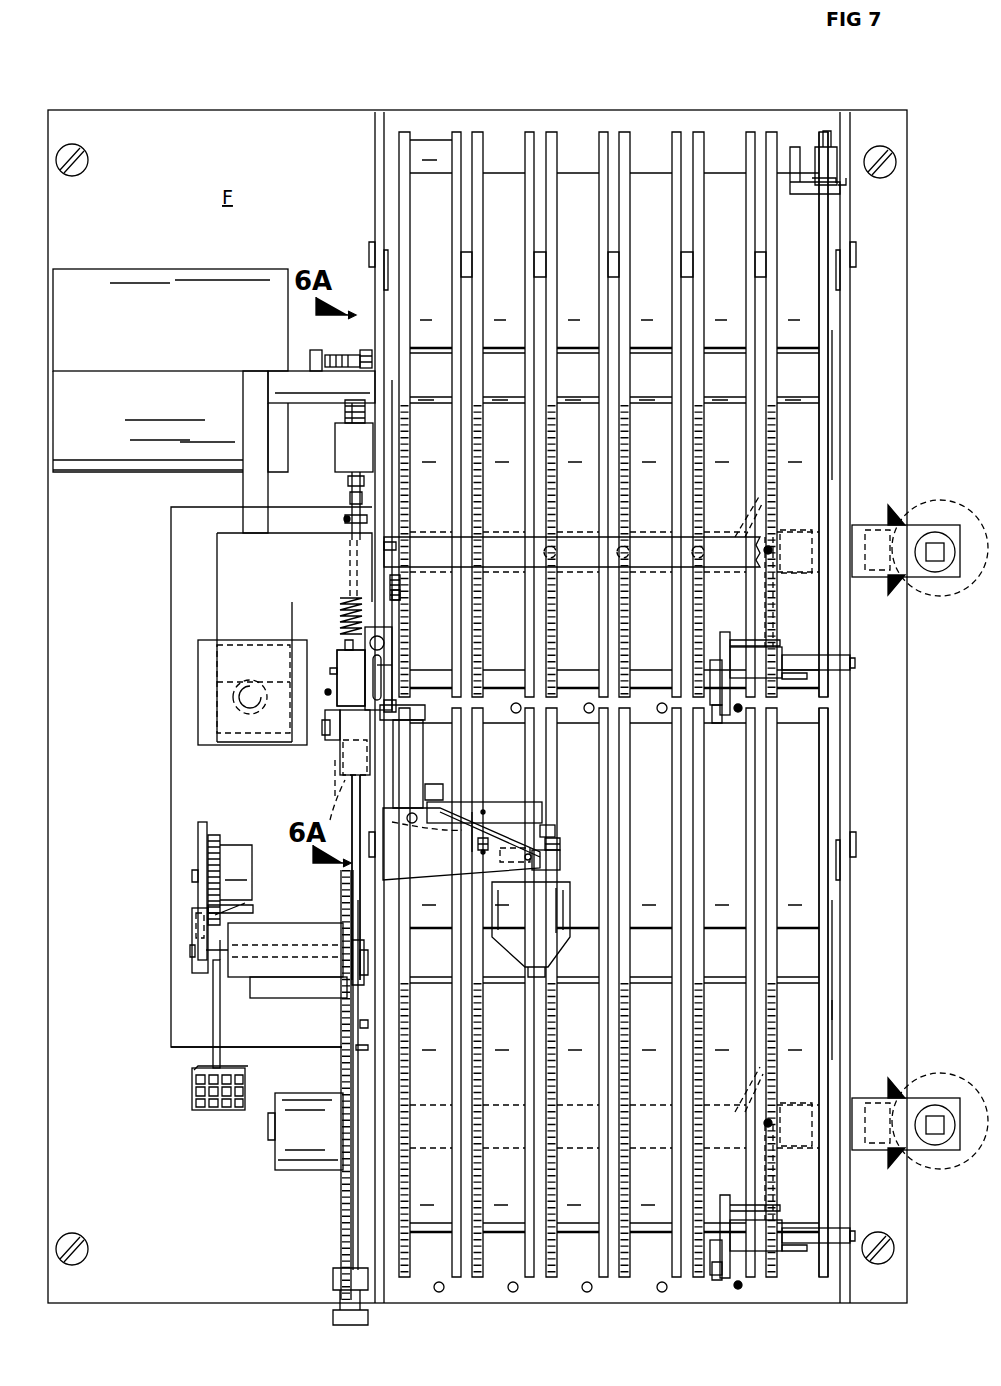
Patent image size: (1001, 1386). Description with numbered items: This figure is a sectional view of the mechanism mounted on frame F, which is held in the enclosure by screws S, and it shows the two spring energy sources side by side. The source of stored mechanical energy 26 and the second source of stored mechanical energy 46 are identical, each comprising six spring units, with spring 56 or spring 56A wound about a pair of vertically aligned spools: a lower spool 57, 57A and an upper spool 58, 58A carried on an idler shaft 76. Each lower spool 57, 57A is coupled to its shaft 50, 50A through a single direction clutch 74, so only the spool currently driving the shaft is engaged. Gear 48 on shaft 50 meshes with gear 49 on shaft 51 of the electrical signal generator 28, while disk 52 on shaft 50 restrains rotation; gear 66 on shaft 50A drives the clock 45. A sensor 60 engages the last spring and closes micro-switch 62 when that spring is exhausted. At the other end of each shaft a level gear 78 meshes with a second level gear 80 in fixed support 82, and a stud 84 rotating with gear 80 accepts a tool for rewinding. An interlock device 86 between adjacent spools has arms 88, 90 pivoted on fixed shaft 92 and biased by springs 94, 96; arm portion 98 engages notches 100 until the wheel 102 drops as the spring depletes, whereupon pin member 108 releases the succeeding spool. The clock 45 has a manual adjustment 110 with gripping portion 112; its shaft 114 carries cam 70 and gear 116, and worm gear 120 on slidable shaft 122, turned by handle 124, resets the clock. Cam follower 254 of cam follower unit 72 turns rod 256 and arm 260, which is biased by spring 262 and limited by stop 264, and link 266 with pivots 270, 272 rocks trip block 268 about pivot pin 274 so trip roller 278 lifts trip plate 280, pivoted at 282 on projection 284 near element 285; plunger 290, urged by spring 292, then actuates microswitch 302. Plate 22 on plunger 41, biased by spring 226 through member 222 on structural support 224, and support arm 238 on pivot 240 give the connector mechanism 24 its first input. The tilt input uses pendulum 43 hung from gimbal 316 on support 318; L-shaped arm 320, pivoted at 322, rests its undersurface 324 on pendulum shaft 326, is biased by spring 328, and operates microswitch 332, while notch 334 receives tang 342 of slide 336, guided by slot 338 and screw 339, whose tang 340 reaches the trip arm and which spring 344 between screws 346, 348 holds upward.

The plate 22 is at (198, 668).
The connector mechanism 24 is at (163, 623).
The source of stored mechanical energy 26 is at (838, 401).
The electrical signal generator 28 is at (159, 273).
The plunger 41 is at (217, 682).
The pendulum 43 is at (585, 922).
The clock 45 is at (279, 1011).
The second source of stored mechanical energy 46 is at (840, 989).
The gear 48 is at (364, 350).
The second gear 49 is at (330, 350).
The shaft 50 is at (277, 1124).
The shaft 50A is at (848, 1137).
The shaft 51 is at (300, 355).
The disk 52 is at (345, 414).
The spiral wound spring 56 is at (609, 414).
The spring 56A is at (609, 992).
The lower spool 57 is at (828, 437).
The lower spool 57A is at (832, 1004).
The upper spool 58 is at (828, 372).
The upper spool 58A is at (828, 937).
The sensor 60 is at (795, 147).
The micro-switch 62 is at (835, 147).
The gear 66 is at (337, 1222).
The cam 70 is at (197, 837).
The cam follower unit 72 is at (183, 995).
The single direction clutch 74 is at (770, 548).
The idler shaft 76 is at (370, 250).
The level gear 78 is at (903, 505).
The second level gear 80 is at (954, 505).
The fixed support 82 is at (955, 560).
The stud 84 is at (932, 560).
The interlock device 86 is at (785, 687).
The first arm 88 is at (775, 642).
The second arm 90 is at (713, 712).
The fixed shaft 92 is at (801, 658).
The spring 94 is at (768, 547).
The spring 96 is at (666, 712).
The arm portion 98 is at (788, 825).
The notches 100 is at (770, 485).
The pivoted wheel 102 is at (710, 680).
The pin member 108 is at (722, 640).
The manual adjustment 110 is at (345, 1254).
The lower gripping portion 112 is at (333, 1325).
The shaft 114 is at (192, 875).
The gear 116 is at (220, 859).
The worm gear 120 is at (274, 950).
The vertically slidable shaft 122 is at (213, 1061).
The handle portion 124 is at (190, 1100).
The member 222 is at (222, 567).
The structural support 224 is at (368, 122).
The spring 226 is at (217, 722).
The support arm 238 is at (248, 428).
The pivot 240 is at (276, 375).
The cam follower 254 is at (195, 904).
The rod 256 is at (187, 964).
The arm 260 is at (360, 950).
The spring 262 is at (357, 1057).
The stop 264 is at (196, 919).
The link 266 is at (352, 883).
The trip block 268 is at (341, 747).
The pivot connection 270 is at (346, 969).
The pivot connection 272 is at (328, 790).
The pivot pin 274 is at (345, 758).
The trip roller 278 is at (324, 730).
The trip plate 280 is at (327, 695).
The pivot 282 is at (336, 678).
The upward projection 284 is at (340, 657).
The plate 285 is at (296, 922).
The plunger 290 is at (347, 522).
The spring 292 is at (342, 608).
The microswitch 302 is at (345, 439).
The gimbal 316 is at (558, 860).
The support 318 is at (420, 882).
The L-shaped arm 320 is at (510, 804).
The pivot 322 is at (415, 823).
The undersurface 324 is at (551, 826).
The pendulum shaft 326 is at (555, 842).
The spring 328 is at (480, 845).
The microswitch 332 is at (442, 787).
The notch 334 is at (426, 722).
The slide 336 is at (393, 662).
The slot 338 is at (379, 678).
The screw 339 is at (383, 638).
The tang 340 is at (258, 688).
The tang 342 is at (425, 705).
The biasing spring 344 is at (400, 582).
The screw 346 is at (398, 598).
The screw 348 is at (406, 551).
The screws S is at (88, 162).